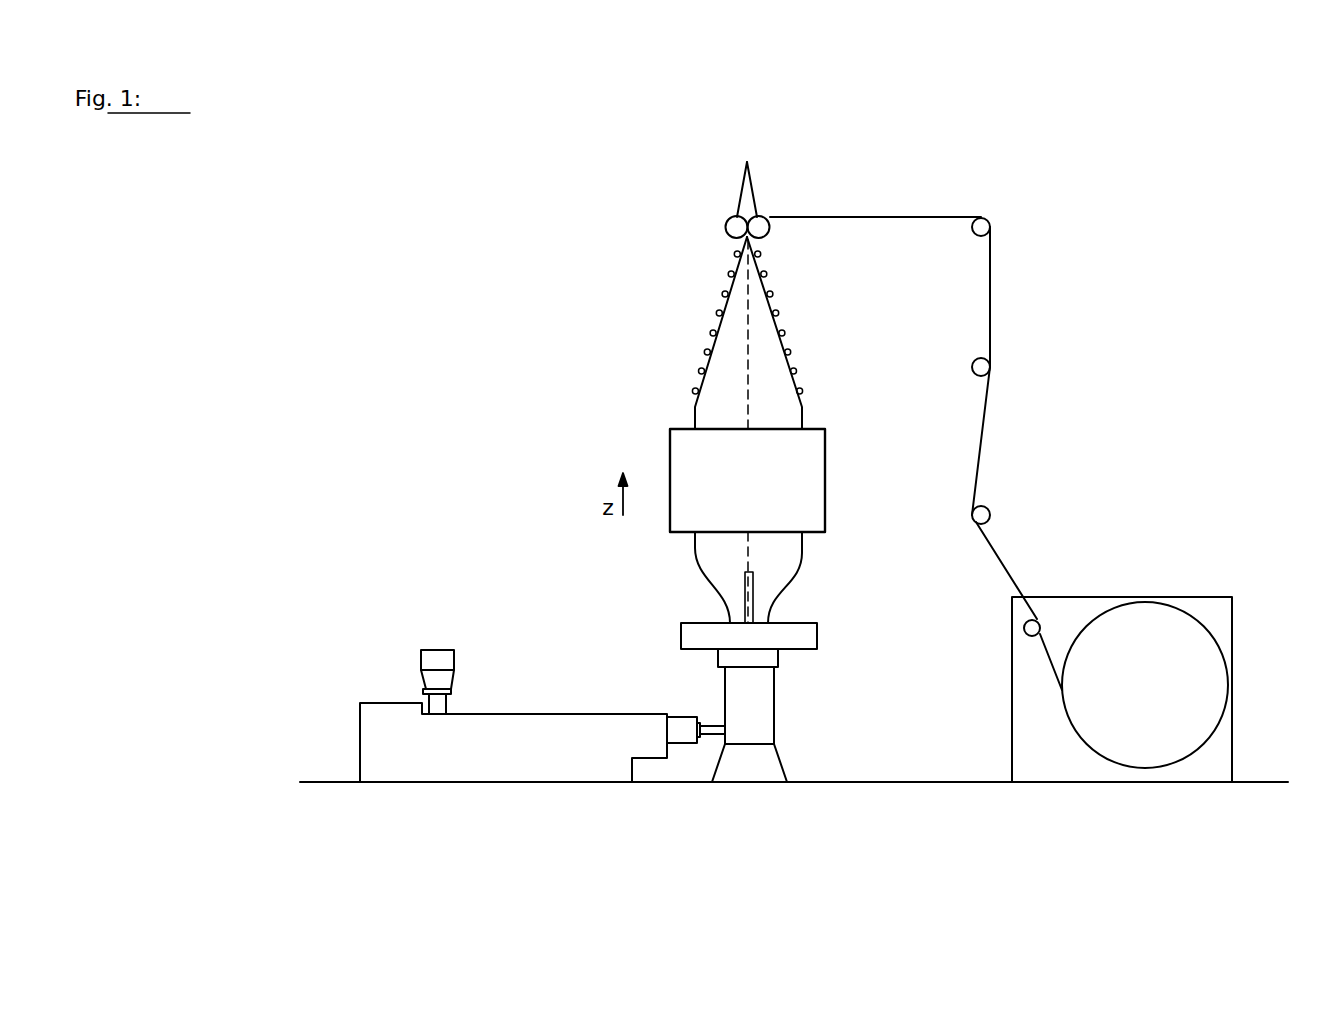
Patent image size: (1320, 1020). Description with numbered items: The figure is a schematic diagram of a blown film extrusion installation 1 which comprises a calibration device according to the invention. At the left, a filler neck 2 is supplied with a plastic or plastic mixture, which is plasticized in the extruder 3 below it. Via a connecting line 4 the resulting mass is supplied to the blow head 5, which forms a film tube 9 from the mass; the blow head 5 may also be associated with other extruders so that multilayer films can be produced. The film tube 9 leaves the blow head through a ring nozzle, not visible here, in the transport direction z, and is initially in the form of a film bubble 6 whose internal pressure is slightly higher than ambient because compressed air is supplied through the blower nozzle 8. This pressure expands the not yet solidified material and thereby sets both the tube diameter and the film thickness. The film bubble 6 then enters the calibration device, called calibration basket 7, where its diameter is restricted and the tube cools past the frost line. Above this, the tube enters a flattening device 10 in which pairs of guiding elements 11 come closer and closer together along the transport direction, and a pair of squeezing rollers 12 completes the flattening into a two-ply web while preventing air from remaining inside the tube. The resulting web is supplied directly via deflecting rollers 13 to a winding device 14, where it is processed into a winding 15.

The blown film extrusion installation 1 is at (545, 323).
The filler neck 2 is at (436, 632).
The extruder 3 is at (465, 762).
The connecting line 4 is at (713, 730).
The blow head 5 is at (760, 683).
The film bubble 6 is at (802, 557).
The calibration device (calibration basket) 7 is at (825, 485).
The blower nozzle 8 is at (747, 593).
The film tube 9 is at (833, 215).
The flattening device 10 is at (817, 279).
The guiding elements 11 is at (720, 313).
The squeezing rollers 12 is at (748, 185).
The deflecting rollers 13 is at (990, 229).
The winding device 14 is at (1189, 568).
The winding 15 is at (1200, 678).